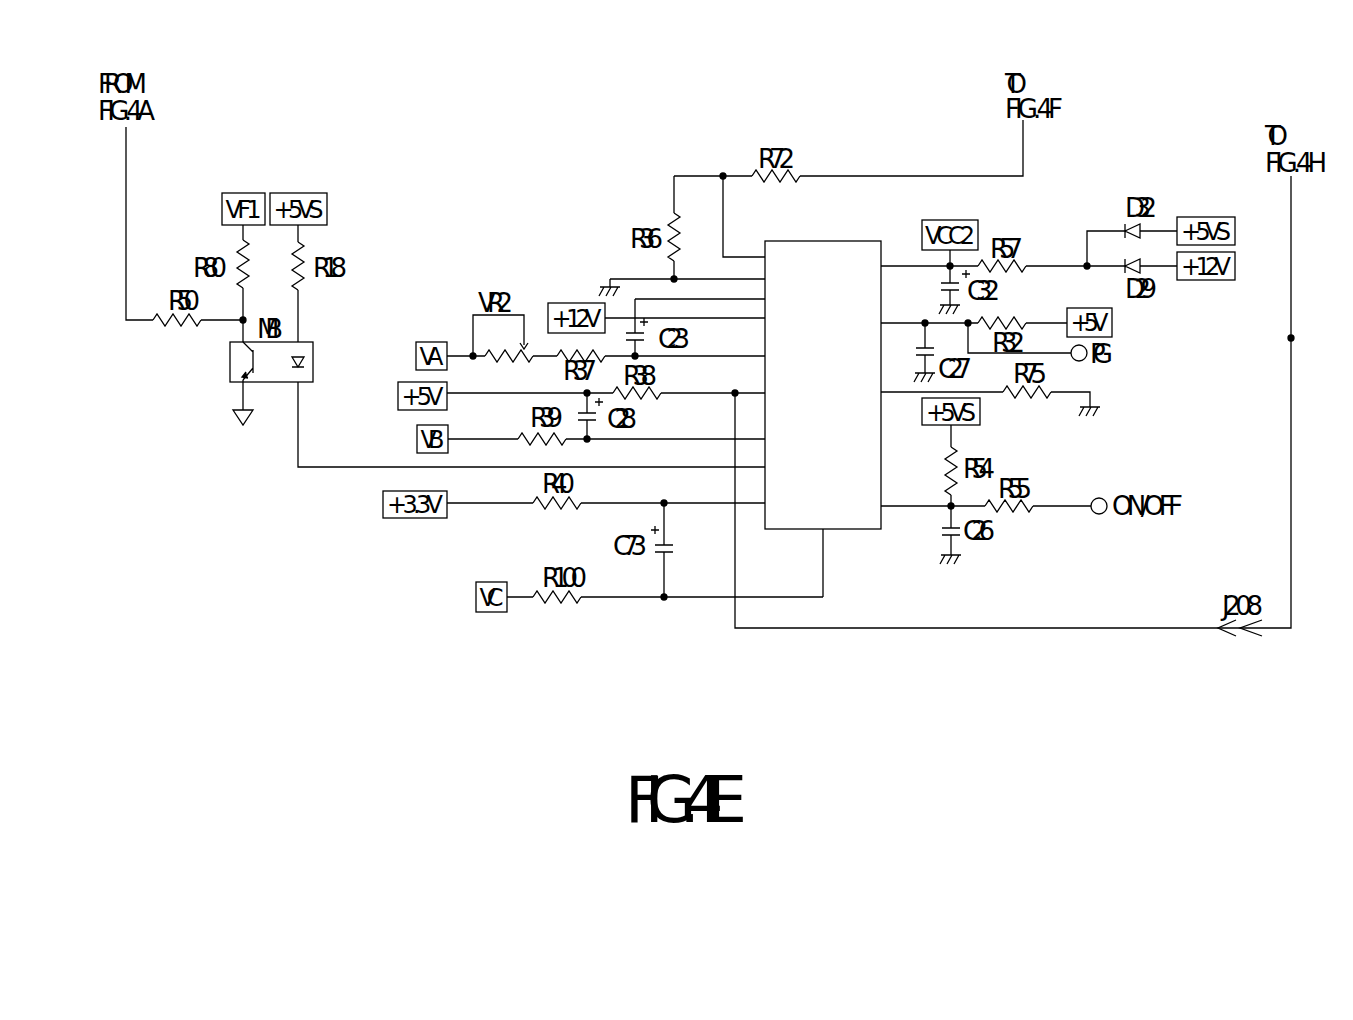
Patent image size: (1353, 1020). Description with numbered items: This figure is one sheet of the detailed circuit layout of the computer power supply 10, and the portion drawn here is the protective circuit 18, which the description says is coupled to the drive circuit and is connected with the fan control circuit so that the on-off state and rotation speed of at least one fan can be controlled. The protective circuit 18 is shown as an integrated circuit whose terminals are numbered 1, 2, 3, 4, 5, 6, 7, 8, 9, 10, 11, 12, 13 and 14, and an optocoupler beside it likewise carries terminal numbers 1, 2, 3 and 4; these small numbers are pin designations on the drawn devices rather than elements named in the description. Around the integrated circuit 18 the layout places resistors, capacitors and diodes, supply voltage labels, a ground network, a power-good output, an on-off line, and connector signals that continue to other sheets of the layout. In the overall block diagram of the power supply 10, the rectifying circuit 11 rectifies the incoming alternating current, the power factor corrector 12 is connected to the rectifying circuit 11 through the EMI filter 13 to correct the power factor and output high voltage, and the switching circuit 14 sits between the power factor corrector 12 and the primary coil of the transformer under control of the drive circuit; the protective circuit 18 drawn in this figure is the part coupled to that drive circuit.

The protective circuit 18 is at (854, 523).
The optocoupler MB pin 1 is at (307, 316).
The optocoupler MB pin 2 is at (531, 424).
The optocoupler MB pin 3 is at (240, 402).
The optocoupler MB pin 4 is at (235, 315).
The controller pin 5 is at (710, 358).
The controller pin 6 is at (935, 393).
The controller pin 7 is at (675, 441).
The controller pin 8 is at (825, 550).
The controller pin 9 is at (710, 298).
The computer power supply 10 is at (695, 321).
The rectifying circuit 11 is at (684, 506).
The power factor corrector 12 is at (723, 393).
The EMI filter 13 is at (918, 264).
The switching circuit 14 is at (918, 324).